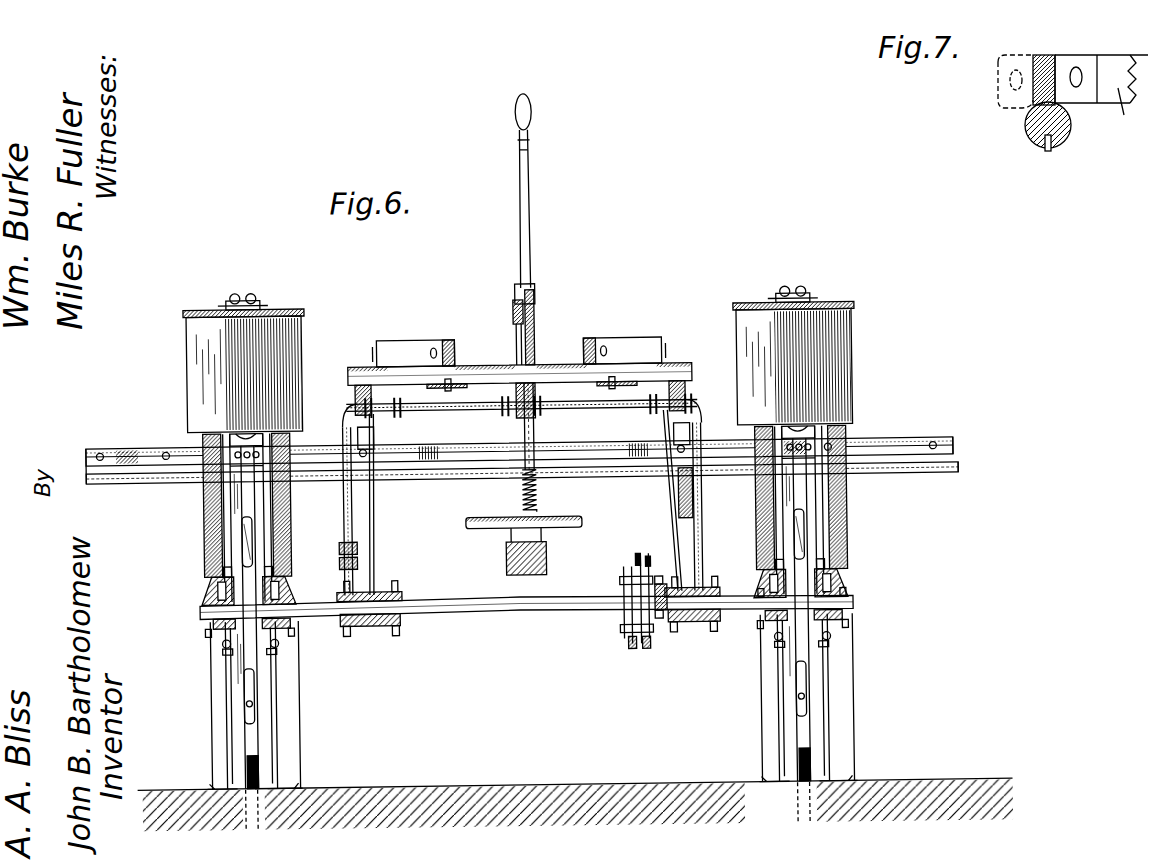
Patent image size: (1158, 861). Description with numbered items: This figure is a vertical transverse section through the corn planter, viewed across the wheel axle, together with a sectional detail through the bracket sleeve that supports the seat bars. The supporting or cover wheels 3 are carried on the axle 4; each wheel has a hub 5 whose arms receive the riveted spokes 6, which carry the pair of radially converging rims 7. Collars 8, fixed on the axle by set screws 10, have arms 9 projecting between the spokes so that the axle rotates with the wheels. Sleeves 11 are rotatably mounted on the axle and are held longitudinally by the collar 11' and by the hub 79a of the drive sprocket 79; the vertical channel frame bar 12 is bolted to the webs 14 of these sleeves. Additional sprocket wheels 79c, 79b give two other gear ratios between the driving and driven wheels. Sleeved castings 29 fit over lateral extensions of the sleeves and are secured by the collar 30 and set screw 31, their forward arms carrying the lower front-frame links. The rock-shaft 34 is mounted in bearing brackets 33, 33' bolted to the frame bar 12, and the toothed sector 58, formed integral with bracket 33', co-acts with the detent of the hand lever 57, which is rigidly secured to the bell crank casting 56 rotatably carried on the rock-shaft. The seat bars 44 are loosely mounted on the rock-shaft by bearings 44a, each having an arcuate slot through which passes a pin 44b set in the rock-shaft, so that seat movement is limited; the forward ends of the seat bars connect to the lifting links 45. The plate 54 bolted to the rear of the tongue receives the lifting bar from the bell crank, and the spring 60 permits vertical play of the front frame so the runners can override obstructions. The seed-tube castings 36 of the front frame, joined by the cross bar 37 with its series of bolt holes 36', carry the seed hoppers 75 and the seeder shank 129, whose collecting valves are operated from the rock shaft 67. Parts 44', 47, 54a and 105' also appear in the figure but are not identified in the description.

In FIG. 6, the cover wheels 3 is at (574, 751).
In FIG. 6, the axle 4 is at (510, 610).
In FIG. 6, the hub 5 is at (222, 642).
In FIG. 6, the spokes 6 is at (225, 678).
In FIG. 6, the radially converging rims 7 is at (212, 783).
In FIG. 6, the collars 8 is at (203, 588).
In FIG. 6, the arms 9 is at (224, 570).
In FIG. 6, the set screws 10 is at (205, 628).
In FIG. 6, the sleeves 11 is at (539, 670).
In FIG. 6, the collar 11' is at (425, 579).
In FIG. 6, the vertical main frame bar 12 is at (345, 470).
In FIG. 6, the webs 14 is at (358, 552).
In FIG. 6, the sleeved castings 29 is at (368, 626).
In FIG. 6, the collar 30 is at (396, 632).
In FIG. 6, the set screw 31 is at (352, 591).
In FIG. 6, the bearing bracket 33 is at (515, 363).
In FIG. 6, the bearing bracket 33' is at (522, 404).
In FIG. 6, the rock-shaft 34 is at (600, 362).
In FIG. 7, the rock-shaft 34 is at (1042, 140).
In FIG. 6, the seed-tube castings 36 is at (519, 429).
In FIG. 6, the bolt holes 36' is at (136, 445).
In FIG. 6, the cross bar 37 is at (928, 444).
In FIG. 6, the seat bars 44 is at (624, 331).
In FIG. 7, the seat bars 44 is at (1073, 101).
In FIG. 6, the bearings 44a is at (452, 342).
In FIG. 7, the bearings 44a is at (1025, 132).
In FIG. 7, the pin 44b is at (1052, 148).
In FIG. 6, the block 44' is at (484, 575).
In FIG. 6, the lifting links 45 is at (668, 470).
In FIG. 6, the block 47 is at (413, 340).
In FIG. 6, the plate 54 is at (514, 548).
In FIG. 6, the disc 54a is at (560, 516).
In FIG. 6, the bell crank casting 56 is at (539, 360).
In FIG. 6, the hand lever 57 is at (534, 222).
In FIG. 6, the toothed sector 58 is at (522, 330).
In FIG. 6, the spring 60 is at (522, 486).
In FIG. 6, the rock shaft 67 is at (118, 480).
In FIG. 6, the seed hoppers 75 is at (519, 358).
In FIG. 6, the drive sprocket 79 is at (636, 566).
In FIG. 6, the hub 79a is at (622, 628).
In FIG. 6, the additional sprocket wheel 79b is at (640, 648).
In FIG. 6, the additional sprocket wheel 79c is at (620, 580).
In FIG. 6, the bracket 105' is at (891, 392).
In FIG. 6, the seeder shank 129 is at (228, 492).